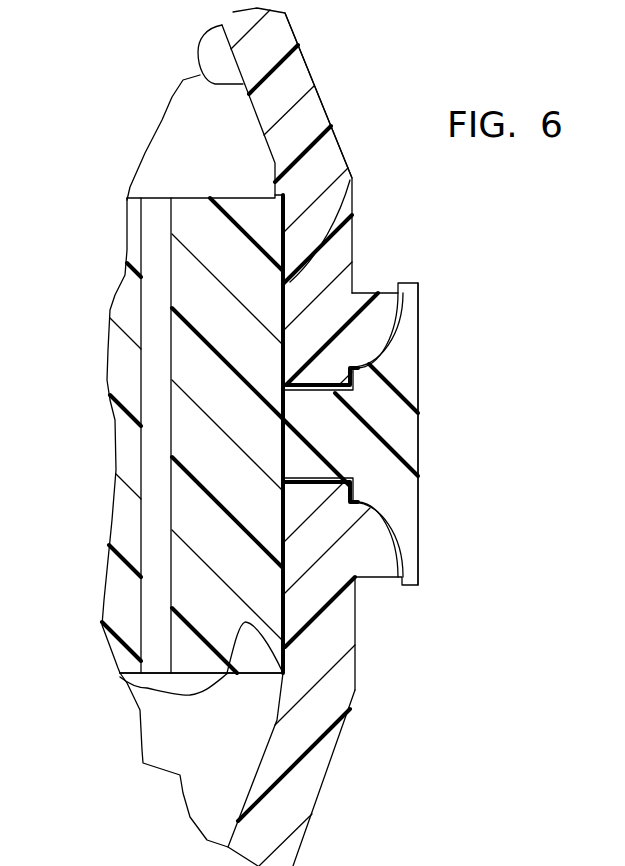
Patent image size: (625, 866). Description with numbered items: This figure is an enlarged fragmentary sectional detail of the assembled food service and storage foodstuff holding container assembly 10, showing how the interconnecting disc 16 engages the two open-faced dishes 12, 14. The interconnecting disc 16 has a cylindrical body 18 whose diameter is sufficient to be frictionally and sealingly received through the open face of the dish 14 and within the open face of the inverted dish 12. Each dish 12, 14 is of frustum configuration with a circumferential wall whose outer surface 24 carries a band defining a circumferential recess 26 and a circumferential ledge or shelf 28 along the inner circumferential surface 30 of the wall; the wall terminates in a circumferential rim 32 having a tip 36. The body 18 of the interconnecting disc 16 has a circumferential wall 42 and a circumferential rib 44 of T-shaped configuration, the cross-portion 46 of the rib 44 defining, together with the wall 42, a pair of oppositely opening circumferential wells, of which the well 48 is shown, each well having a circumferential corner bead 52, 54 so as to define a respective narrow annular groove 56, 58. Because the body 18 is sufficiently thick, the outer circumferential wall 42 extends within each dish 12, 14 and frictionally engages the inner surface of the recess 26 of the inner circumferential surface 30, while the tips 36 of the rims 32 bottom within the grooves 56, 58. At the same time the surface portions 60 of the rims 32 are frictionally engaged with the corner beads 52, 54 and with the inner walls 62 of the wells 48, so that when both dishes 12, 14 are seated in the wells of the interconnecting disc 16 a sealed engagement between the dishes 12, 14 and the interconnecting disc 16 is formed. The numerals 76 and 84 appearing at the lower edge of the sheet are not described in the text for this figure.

The food service and storage foodstuff holding container assembly 10 is at (513, 213).
The open-faced dish 12 is at (290, 118).
The open-faced dish 14 is at (320, 785).
The interconnecting disc 16 is at (436, 592).
The cylindrical body 18 is at (212, 585).
The outer surface 24 is at (306, 63).
The circumferential recess 26 is at (390, 633).
The circumferential ledge 28 is at (135, 686).
The inner circumferential surface 30 is at (197, 66).
The circumferential rim 32 is at (408, 540).
The tip 36 is at (337, 497).
The circumferential wall 42 is at (292, 231).
The circumferential rib 44 is at (293, 445).
The cross-portion 46 is at (393, 420).
The circumferential well 48 is at (314, 377).
The corner bead 52 is at (408, 362).
The corner bead 54 is at (314, 493).
The narrow annular groove 56 is at (283, 528).
The narrow annular groove 58 is at (345, 172).
The surface portion 60 is at (345, 452).
The inner wall 62 is at (278, 317).
The element 76 is at (500, 856).
The element 84 is at (605, 856).